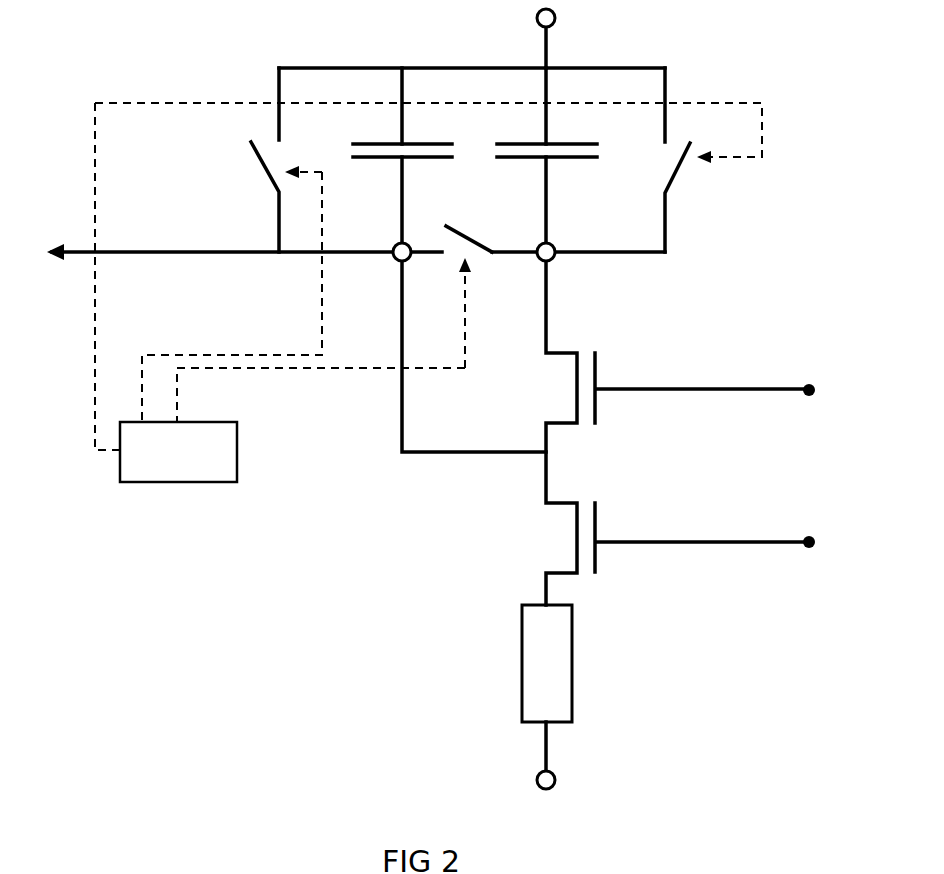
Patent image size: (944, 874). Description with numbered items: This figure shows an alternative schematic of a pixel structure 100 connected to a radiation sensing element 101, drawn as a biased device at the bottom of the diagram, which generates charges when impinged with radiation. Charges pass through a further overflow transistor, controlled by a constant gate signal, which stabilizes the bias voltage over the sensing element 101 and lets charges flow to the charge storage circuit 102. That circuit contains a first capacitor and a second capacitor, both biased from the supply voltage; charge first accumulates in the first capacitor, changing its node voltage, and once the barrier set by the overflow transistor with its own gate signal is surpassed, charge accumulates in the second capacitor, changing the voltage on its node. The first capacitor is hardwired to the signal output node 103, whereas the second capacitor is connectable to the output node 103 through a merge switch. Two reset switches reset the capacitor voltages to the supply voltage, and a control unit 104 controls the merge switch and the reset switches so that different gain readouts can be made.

The pixel structure 100 is at (320, 570).
The radiation sensing element 101 is at (567, 663).
The charge storage circuit 102 is at (679, 67).
The signal output node 103 is at (273, 258).
The control unit 104 is at (208, 292).